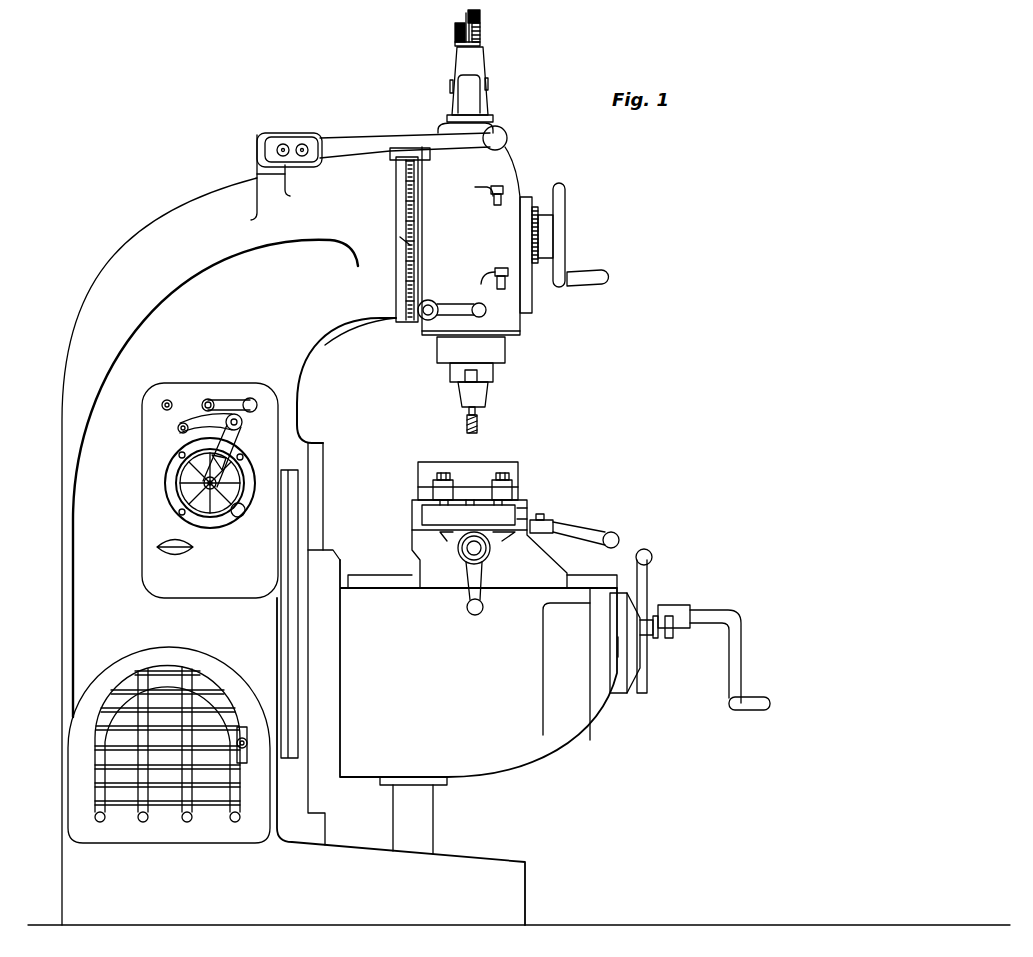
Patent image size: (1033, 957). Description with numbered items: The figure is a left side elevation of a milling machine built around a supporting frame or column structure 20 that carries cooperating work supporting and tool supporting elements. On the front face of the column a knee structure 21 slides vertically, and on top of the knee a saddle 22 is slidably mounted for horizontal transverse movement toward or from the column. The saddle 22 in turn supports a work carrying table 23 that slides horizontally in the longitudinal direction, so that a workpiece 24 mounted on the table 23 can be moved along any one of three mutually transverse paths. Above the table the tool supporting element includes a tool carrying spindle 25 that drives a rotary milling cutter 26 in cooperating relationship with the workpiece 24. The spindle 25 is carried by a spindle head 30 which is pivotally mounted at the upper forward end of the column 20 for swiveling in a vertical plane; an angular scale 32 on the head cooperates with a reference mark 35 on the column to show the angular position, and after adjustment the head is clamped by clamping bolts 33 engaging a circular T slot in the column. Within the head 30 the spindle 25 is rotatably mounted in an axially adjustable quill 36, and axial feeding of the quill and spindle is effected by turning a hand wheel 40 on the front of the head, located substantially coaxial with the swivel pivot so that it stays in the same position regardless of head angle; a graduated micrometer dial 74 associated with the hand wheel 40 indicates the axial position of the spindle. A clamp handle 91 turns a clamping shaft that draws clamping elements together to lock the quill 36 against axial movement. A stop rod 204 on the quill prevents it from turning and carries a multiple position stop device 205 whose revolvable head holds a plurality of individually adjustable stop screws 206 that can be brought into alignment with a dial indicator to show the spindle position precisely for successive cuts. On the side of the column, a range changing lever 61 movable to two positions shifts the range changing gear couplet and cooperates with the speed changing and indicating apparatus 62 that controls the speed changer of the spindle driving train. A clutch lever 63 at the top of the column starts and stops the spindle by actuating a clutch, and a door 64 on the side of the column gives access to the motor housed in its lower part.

The column structure 20 is at (171, 221).
The knee structure 21 is at (528, 750).
The saddle 22 is at (430, 569).
The work carrying table 23 is at (418, 512).
The workpiece 24 is at (424, 477).
The tool carrying spindle 25 is at (456, 373).
The rotary milling cutter 26 is at (468, 411).
The spindle head 30 is at (541, 150).
The angular scale 32 is at (417, 211).
The clamping bolts 33 is at (512, 260).
The reference mark 35 is at (400, 234).
The quill 36 is at (504, 359).
The hand wheel 40 is at (561, 198).
The range changing lever 61 is at (232, 401).
The speed changing and indicating apparatus 62 is at (153, 470).
The clutch lever 63 is at (380, 141).
The door 64 is at (214, 670).
The graduated micrometer dial 74 is at (537, 266).
The clamp handle 91 is at (452, 310).
The stop rod 204 is at (468, 17).
The multiple position stop device 205 is at (517, 73).
The stop screws 206 is at (489, 35).